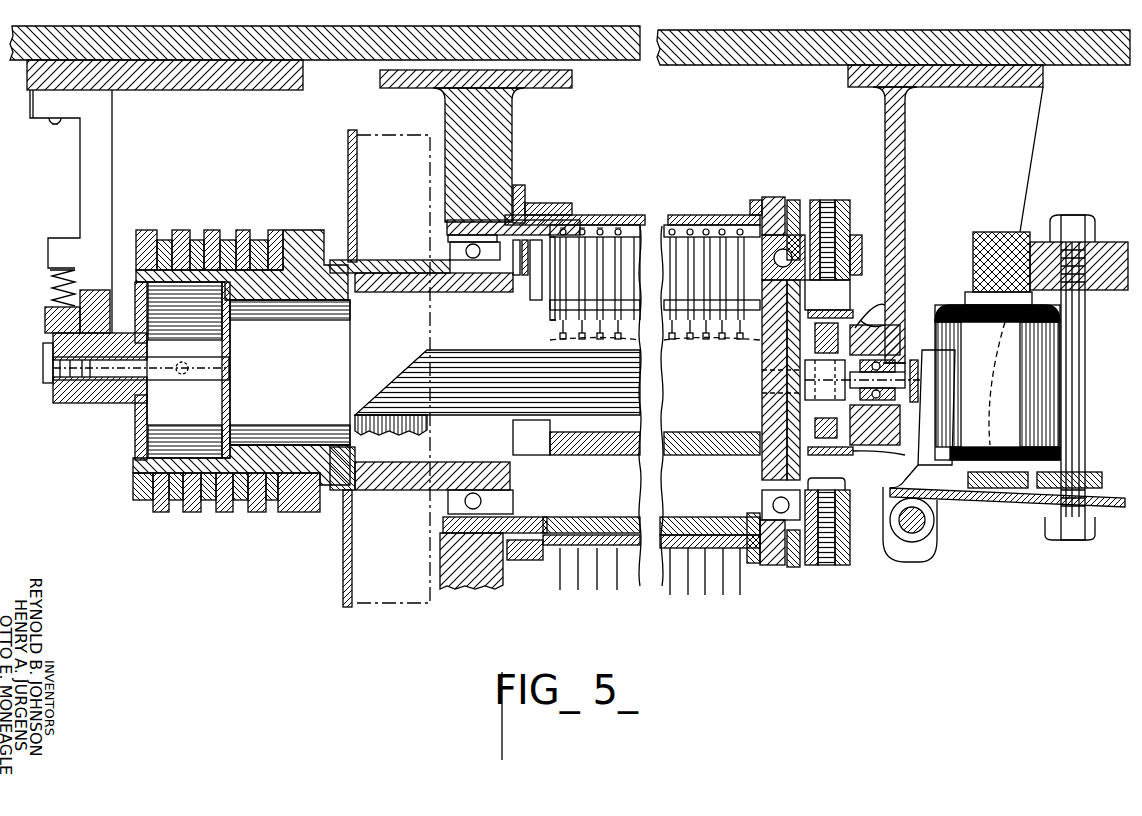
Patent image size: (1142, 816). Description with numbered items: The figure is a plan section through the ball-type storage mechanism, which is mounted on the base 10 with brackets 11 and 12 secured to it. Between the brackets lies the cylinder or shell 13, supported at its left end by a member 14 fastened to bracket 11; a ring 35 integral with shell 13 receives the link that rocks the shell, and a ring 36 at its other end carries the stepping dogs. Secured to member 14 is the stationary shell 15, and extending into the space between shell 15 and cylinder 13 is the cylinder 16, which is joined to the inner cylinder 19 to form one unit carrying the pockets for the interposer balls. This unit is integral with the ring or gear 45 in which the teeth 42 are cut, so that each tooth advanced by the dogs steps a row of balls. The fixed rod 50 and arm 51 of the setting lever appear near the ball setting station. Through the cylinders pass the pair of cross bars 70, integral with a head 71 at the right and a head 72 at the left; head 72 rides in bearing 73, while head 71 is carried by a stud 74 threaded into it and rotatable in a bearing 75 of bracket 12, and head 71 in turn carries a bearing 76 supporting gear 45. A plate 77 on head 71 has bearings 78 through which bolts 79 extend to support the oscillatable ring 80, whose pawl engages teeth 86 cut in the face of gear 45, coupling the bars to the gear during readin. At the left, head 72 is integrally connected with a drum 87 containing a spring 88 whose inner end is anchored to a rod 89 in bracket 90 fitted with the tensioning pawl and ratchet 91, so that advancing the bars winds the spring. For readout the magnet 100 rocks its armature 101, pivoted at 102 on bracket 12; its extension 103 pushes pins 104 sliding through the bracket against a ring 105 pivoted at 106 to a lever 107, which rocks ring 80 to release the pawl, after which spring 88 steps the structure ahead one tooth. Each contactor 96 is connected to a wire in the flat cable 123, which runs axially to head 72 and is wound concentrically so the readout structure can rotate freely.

The base 10 is at (703, 31).
The bracket 11 is at (512, 138).
The bracket 12 is at (1030, 151).
The cylinder or shell 13 is at (640, 215).
The member 14 is at (520, 222).
The shell or cylinder 15 is at (608, 222).
The cylinder 16 is at (680, 223).
The cylinder 19 is at (632, 250).
The ring 35 is at (557, 204).
The ring 36 is at (730, 210).
The teeth 42 is at (765, 197).
The ring (gear) 45 is at (776, 198).
The fixed rod 50 is at (548, 548).
The arm 51 is at (722, 590).
The cross bars 70 is at (562, 395).
The head 71 is at (762, 410).
The head 72 is at (481, 463).
The bearing 73 is at (450, 506).
The stud 74 is at (825, 381).
The bearing 75 is at (890, 356).
The bearing 76 is at (790, 566).
The plate 77 is at (803, 285).
The bearings 78 is at (870, 322).
The bolts 79 is at (830, 200).
The ring 80 is at (856, 235).
The teeth 86 is at (795, 201).
The drum 87 is at (255, 446).
The spring 88 is at (185, 425).
The rod 89 is at (230, 372).
The bracket 90 is at (112, 180).
The tensioning pawl and ratchet 91 is at (46, 320).
The contact element 96 is at (670, 337).
The magnet 100 is at (997, 382).
The armature 101 is at (1005, 500).
The pivot 102 is at (922, 528).
The extension 103 is at (950, 370).
The pins 104 is at (913, 393).
The ring 105 is at (895, 326).
The pivot 106 is at (880, 312).
The lever 107 is at (905, 451).
The flat cable 123 is at (478, 350).